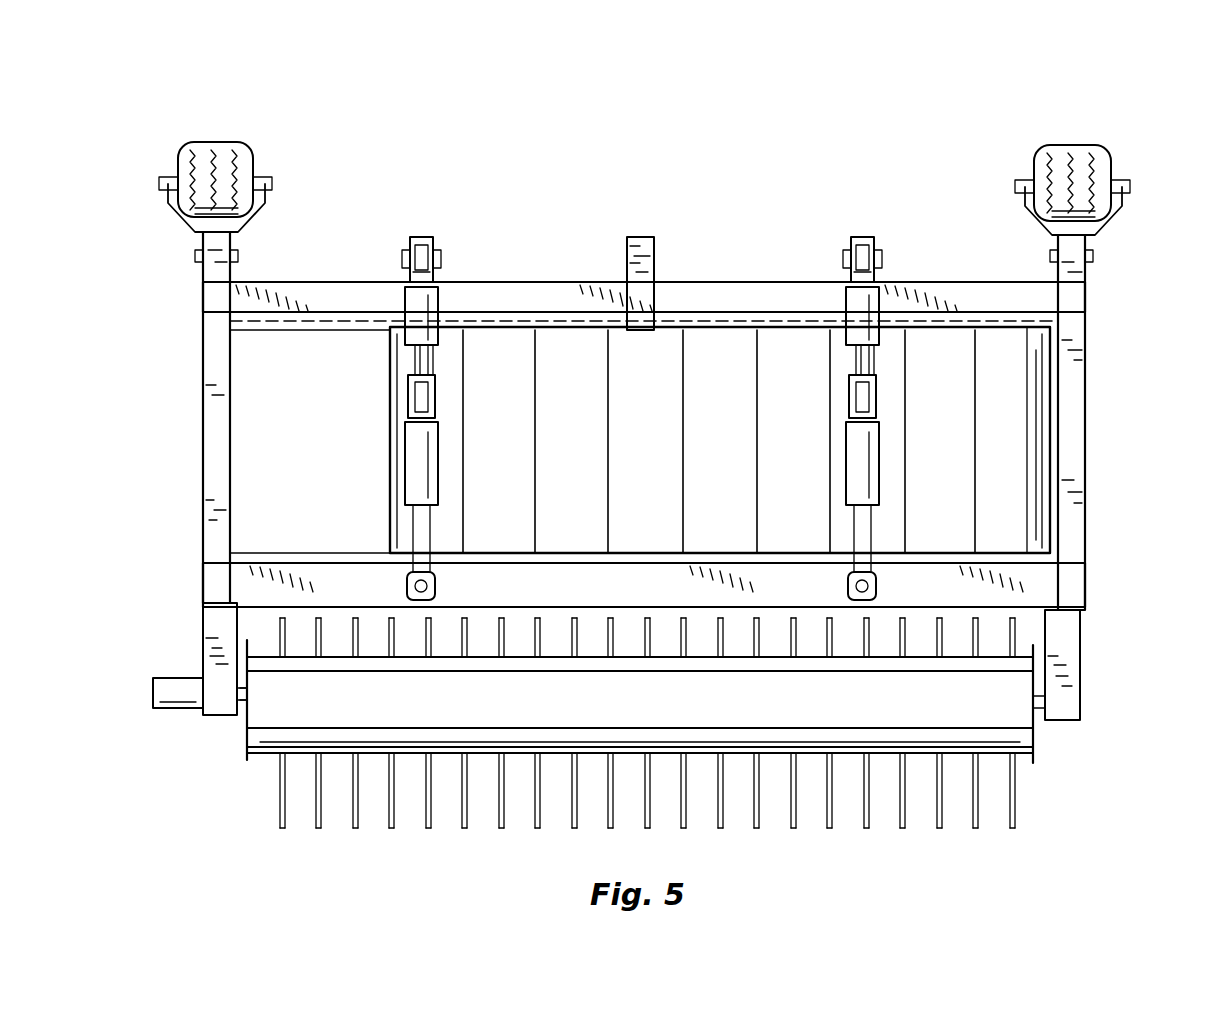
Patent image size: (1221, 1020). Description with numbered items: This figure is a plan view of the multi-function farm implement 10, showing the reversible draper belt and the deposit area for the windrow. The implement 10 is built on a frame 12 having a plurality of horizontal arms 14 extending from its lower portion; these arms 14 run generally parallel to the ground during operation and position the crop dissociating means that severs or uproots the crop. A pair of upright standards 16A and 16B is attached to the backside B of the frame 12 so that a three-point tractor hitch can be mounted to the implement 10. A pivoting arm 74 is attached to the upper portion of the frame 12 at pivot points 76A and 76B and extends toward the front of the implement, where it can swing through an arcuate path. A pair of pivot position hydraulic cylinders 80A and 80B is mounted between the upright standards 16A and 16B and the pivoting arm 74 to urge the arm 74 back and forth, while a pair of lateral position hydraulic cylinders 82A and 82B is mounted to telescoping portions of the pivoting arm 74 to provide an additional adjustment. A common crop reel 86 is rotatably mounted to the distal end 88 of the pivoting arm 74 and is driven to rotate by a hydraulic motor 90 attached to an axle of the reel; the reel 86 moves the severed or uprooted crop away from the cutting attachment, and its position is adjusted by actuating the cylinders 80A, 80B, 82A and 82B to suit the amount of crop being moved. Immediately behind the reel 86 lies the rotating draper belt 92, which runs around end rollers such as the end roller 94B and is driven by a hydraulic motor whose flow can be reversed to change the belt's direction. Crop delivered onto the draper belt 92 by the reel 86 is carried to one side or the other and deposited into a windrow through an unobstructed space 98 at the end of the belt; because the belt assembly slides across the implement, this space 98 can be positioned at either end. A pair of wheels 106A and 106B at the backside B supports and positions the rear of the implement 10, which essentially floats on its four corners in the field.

The multi-function farm implement 10 is at (742, 163).
The frame 12 is at (304, 282).
The horizontal arms 14 is at (203, 536).
The upright standard 16A is at (433, 258).
The upright standard 16B is at (874, 258).
The pivoting arm 74 is at (1085, 600).
The pivot point 76A is at (410, 266).
The pivot point 76B is at (851, 268).
The pivot position hydraulic cylinder 80A is at (440, 306).
The pivot position hydraulic cylinder 80B is at (880, 308).
The lateral position hydraulic cylinder 82A is at (405, 458).
The lateral position hydraulic cylinder 82B is at (880, 470).
The crop reel 86 is at (247, 750).
The distal end 88 is at (205, 720).
The hydraulic motor 90 is at (153, 688).
The draper belt 92 is at (655, 452).
The end roller 94B is at (1085, 566).
The unobstructed space 98 is at (310, 390).
The wheel 106A is at (232, 140).
The wheel 106B is at (1065, 144).
The backside B is at (632, 181).